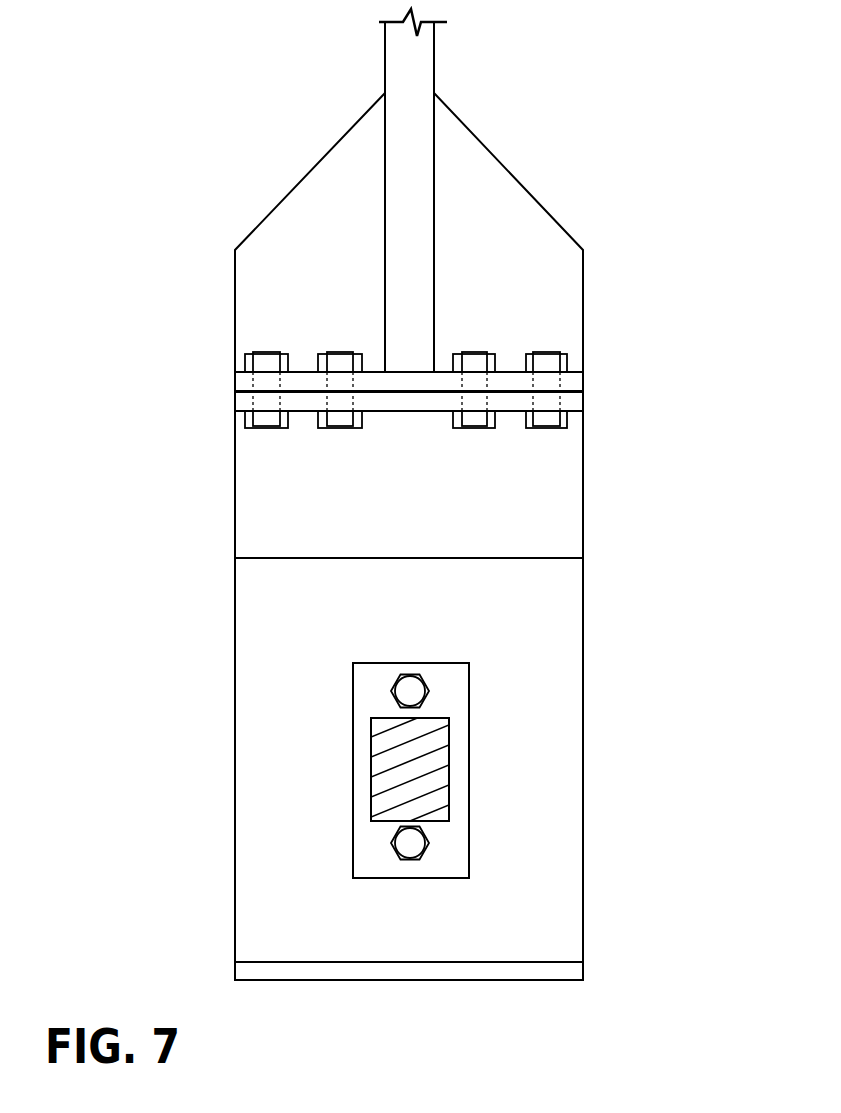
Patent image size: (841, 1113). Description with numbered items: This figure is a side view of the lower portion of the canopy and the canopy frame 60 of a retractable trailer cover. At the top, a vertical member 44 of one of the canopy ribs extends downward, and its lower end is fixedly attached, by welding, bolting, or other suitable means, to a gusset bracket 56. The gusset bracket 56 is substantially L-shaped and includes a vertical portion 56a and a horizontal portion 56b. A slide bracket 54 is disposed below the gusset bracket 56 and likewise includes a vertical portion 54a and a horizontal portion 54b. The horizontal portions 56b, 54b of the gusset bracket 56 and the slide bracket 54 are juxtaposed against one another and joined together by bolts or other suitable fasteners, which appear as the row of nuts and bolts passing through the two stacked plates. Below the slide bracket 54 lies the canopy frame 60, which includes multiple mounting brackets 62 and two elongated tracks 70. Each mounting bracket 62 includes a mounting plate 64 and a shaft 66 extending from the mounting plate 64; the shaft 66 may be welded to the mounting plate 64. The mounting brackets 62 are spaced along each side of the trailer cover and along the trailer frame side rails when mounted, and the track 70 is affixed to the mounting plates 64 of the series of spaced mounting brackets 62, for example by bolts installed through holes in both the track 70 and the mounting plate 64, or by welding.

The vertical member 44 is at (416, 75).
The gusset bracket 56 is at (590, 262).
The vertical portion 56a is at (550, 298).
The horizontal portion 56b is at (575, 381).
The slide bracket 54 is at (590, 454).
The vertical portion 54a is at (550, 528).
The horizontal portion 54b is at (575, 402).
The track 70 is at (319, 578).
The canopy frame 60 is at (607, 842).
The mounting bracket 62 is at (345, 770).
The mounting plate 64 is at (387, 663).
The shaft 66 is at (450, 736).